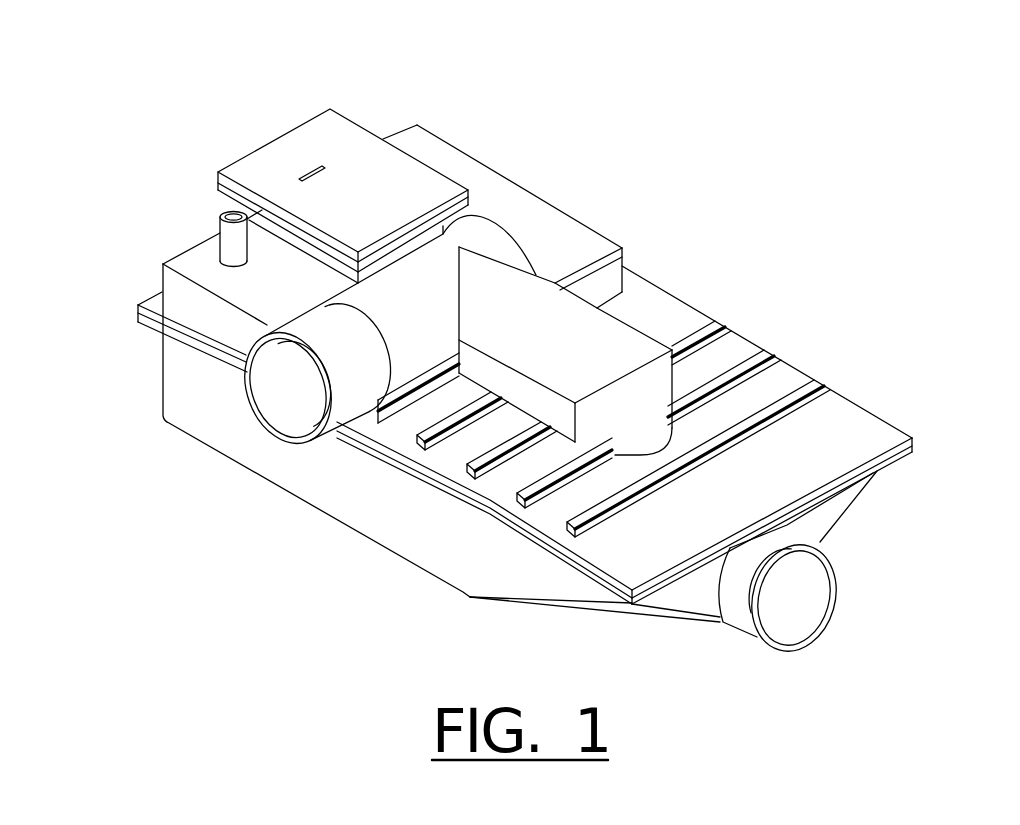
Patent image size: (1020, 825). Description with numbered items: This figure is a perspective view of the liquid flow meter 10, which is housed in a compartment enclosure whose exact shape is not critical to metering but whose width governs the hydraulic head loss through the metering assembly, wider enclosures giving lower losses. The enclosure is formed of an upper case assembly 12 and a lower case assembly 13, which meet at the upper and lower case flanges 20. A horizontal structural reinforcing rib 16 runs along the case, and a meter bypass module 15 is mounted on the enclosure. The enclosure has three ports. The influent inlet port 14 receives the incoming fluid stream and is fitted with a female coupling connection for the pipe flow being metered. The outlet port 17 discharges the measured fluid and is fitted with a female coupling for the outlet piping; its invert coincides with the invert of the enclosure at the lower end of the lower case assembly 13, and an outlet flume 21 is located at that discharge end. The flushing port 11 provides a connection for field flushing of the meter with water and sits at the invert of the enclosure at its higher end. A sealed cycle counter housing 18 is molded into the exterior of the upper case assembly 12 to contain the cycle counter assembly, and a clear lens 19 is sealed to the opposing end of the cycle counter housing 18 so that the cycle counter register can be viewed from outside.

The liquid flow meter 10 is at (272, 135).
The flushing port 11 is at (222, 212).
The upper case assembly 12 is at (158, 252).
The lower case assembly 13 is at (158, 376).
The influent inlet port 14 is at (287, 441).
The meter bypass module 15 is at (627, 353).
The horizontal structural reinforcing rib 16 is at (763, 357).
The outlet port 17 is at (799, 648).
The cycle counter housing 18 is at (375, 131).
The clear lens 19 is at (325, 163).
The upper and lower case flanges 20 is at (139, 305).
The outlet flume 21 is at (627, 615).